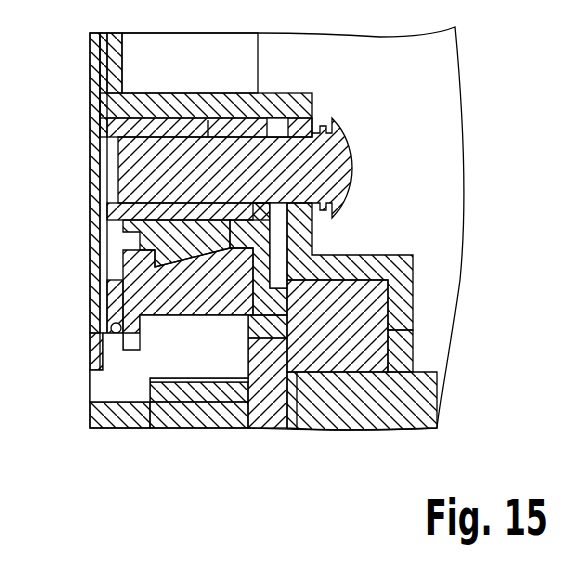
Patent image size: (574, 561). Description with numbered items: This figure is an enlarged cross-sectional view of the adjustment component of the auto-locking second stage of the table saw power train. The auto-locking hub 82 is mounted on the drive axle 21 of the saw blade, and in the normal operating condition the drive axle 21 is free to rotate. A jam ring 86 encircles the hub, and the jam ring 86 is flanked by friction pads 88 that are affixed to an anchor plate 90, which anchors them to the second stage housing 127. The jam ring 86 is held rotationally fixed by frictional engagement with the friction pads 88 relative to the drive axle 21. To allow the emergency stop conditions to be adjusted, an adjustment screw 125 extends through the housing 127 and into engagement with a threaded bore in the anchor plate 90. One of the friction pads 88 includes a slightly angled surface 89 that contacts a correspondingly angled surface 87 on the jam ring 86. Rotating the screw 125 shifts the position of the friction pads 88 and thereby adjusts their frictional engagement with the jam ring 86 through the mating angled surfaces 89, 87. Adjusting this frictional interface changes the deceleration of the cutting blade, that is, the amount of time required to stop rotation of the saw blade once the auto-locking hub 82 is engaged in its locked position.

The drive axle 21 is at (265, 398).
The auto-locking hub 82 is at (140, 360).
The jam ring 86 is at (178, 297).
The angled surface 87 is at (195, 228).
The friction pads 88 is at (108, 233).
The angled surface 89 is at (125, 262).
The anchor plate 90 is at (122, 124).
The adjustment screw 125 is at (333, 170).
The second stage housing 127 is at (413, 277).